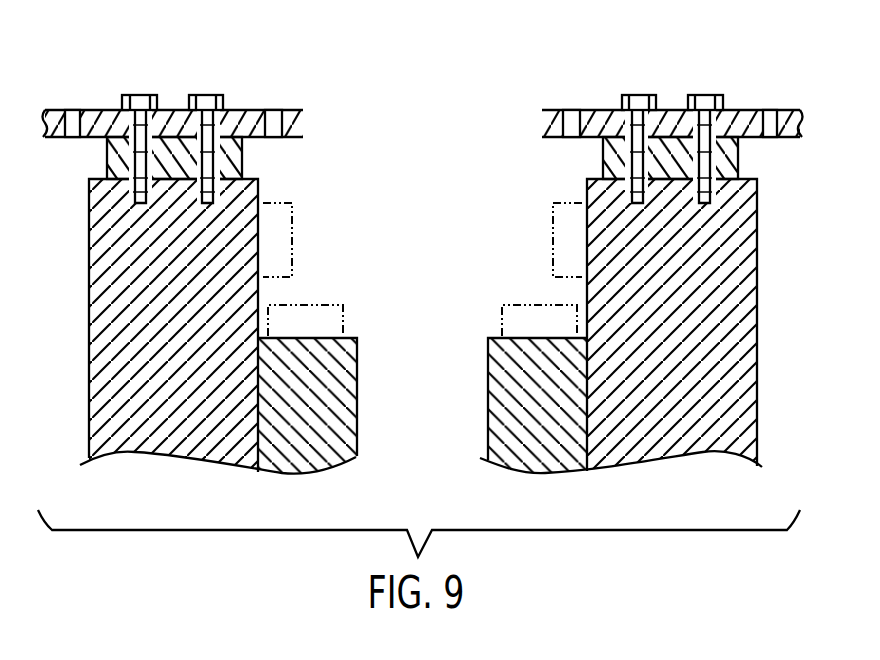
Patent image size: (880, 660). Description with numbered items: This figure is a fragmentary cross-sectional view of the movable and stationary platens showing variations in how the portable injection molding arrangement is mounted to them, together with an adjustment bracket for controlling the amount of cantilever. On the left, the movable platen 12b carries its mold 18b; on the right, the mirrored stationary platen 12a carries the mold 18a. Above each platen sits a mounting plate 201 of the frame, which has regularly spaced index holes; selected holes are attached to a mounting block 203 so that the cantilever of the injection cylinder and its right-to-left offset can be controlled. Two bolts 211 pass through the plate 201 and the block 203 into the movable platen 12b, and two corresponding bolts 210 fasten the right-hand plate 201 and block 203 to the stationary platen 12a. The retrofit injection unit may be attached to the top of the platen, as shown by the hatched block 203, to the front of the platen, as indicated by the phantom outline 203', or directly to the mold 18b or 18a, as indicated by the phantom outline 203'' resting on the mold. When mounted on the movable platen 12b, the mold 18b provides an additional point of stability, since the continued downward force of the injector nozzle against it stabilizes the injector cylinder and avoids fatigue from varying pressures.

The mounting plate 201 is at (248, 110).
The mounting block 203 is at (422, 162).
The mounting block (alternative position) 203' is at (422, 240).
The mounting block (alternative position) 203'' is at (422, 307).
The bolts 210 is at (705, 95).
The bolts 211 is at (205, 95).
The platen 12a is at (757, 367).
The movable platen 12b is at (89, 367).
The mold 18a is at (488, 378).
The mold 18b is at (360, 387).